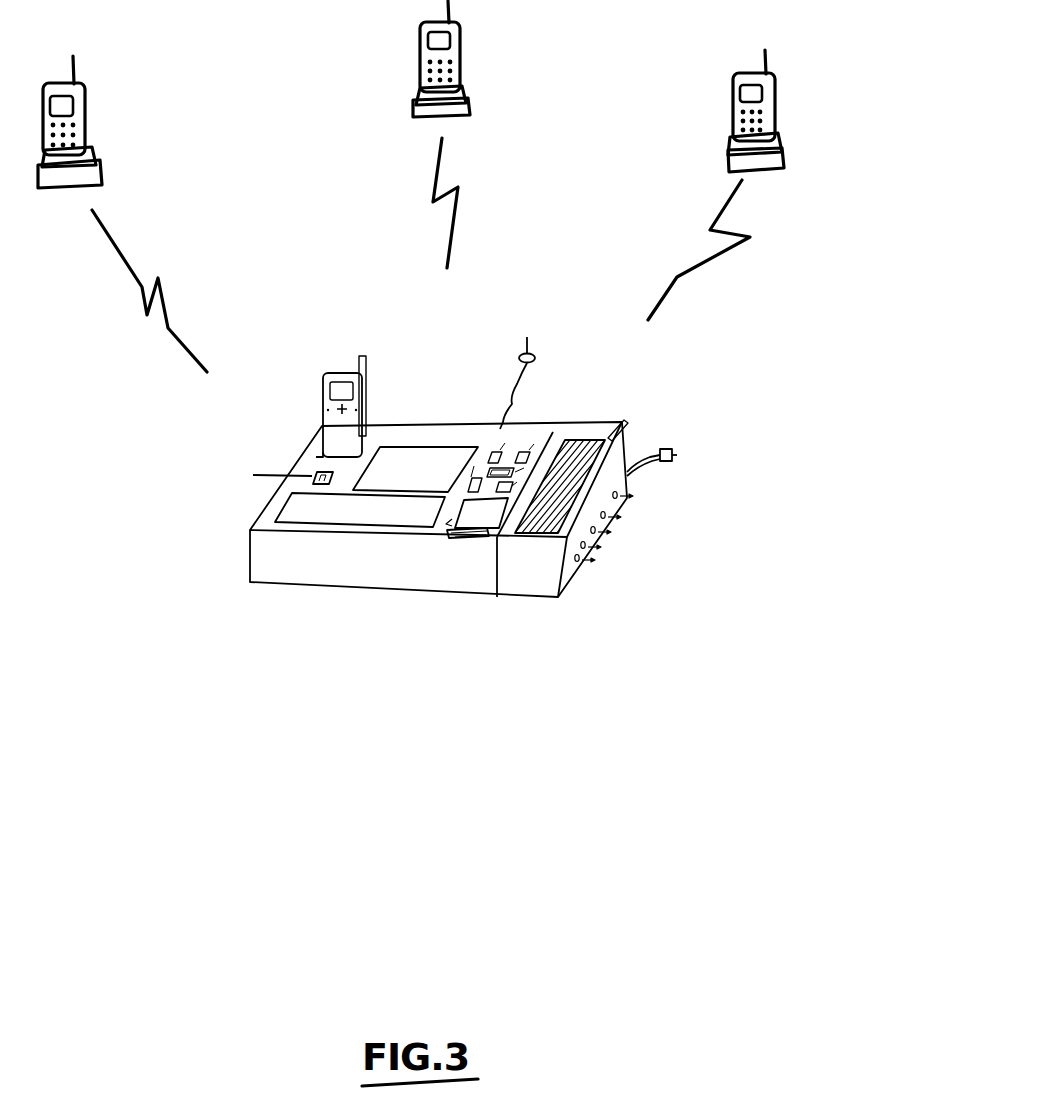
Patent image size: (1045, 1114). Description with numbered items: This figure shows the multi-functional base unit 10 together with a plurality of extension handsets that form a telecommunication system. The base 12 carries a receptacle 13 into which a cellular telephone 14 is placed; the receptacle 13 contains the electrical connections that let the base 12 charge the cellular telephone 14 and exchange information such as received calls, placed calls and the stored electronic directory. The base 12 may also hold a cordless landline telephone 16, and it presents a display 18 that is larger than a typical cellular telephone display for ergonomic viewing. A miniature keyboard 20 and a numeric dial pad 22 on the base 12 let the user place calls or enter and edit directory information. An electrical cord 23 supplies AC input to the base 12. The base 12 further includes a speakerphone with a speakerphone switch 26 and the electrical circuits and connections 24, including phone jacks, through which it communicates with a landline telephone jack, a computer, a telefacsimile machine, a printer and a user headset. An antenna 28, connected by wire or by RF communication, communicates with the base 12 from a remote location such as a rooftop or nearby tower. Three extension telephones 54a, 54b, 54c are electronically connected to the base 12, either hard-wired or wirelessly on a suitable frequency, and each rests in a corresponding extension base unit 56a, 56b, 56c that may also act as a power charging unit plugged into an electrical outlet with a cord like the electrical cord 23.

The multi-functional base unit 10 is at (293, 628).
The base 12 is at (365, 581).
The receptacle 13 is at (367, 448).
The cellular telephone 14 is at (365, 393).
The cordless landline telephone 16 is at (583, 440).
The display 18 is at (437, 446).
The miniature keyboard 20 is at (421, 521).
The numeric dial pad 22 is at (443, 534).
The electrical cord 23 is at (665, 447).
The electrical circuits and connections 24 is at (605, 565).
The speakerphone switch 26 is at (467, 536).
The antenna 28 is at (538, 352).
The extension telephone 54a is at (92, 108).
The extension telephone 54b is at (460, 53).
The extension telephone 54c is at (780, 98).
The extension base unit 56a is at (100, 170).
The extension base unit 56b is at (468, 103).
The extension base unit 56c is at (783, 152).